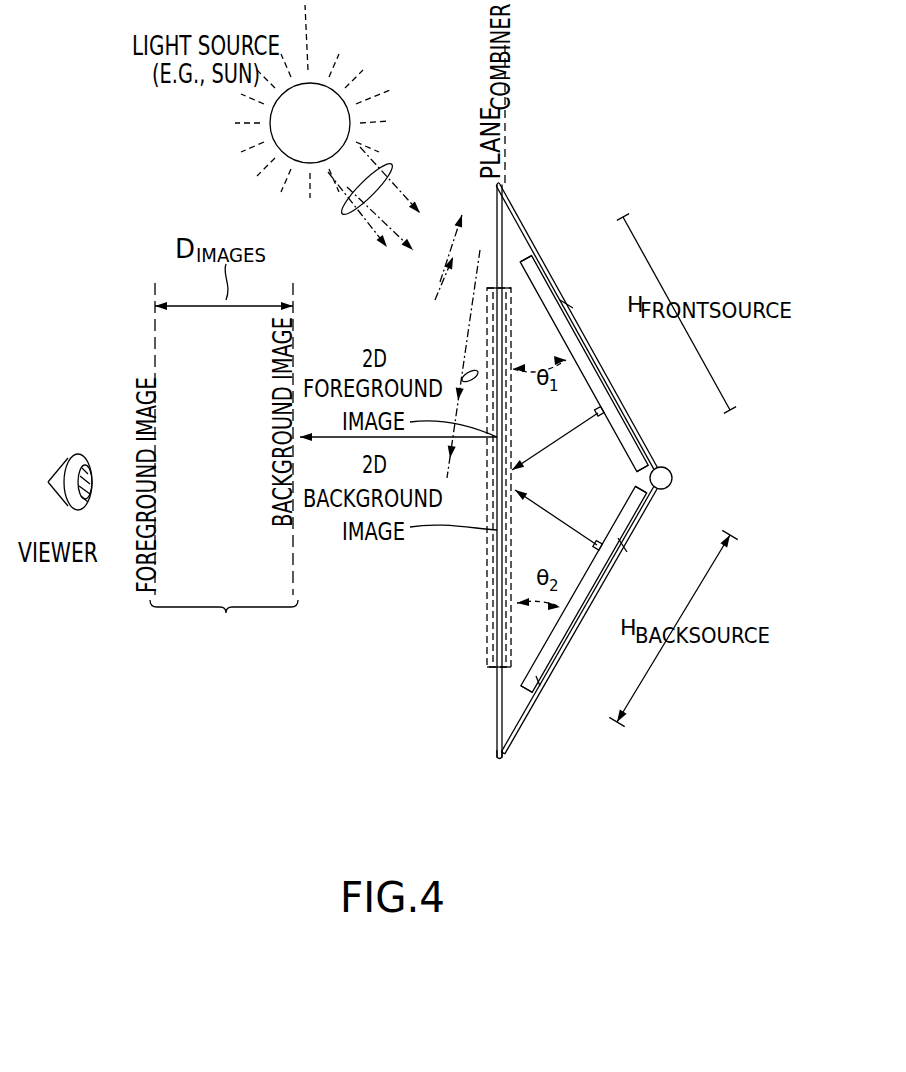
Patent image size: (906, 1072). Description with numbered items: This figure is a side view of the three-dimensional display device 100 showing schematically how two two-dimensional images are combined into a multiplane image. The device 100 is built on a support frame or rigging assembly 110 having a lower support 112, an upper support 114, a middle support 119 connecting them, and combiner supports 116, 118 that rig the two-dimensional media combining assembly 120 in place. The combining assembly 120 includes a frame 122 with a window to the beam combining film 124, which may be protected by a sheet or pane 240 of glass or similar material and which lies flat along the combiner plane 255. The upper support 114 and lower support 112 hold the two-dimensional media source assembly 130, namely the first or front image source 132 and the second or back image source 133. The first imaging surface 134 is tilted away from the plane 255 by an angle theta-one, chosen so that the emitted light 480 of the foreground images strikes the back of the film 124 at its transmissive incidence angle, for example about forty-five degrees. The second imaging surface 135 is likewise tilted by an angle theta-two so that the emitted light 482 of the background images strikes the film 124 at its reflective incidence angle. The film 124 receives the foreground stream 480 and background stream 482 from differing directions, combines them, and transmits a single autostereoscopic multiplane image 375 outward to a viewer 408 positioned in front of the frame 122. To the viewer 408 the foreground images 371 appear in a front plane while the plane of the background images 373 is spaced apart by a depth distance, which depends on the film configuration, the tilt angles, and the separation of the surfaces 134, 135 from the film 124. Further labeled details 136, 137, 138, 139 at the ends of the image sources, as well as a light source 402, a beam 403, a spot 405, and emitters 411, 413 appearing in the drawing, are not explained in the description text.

The 3D display device 100 is at (637, 135).
The support frame or rigging assembly 110 is at (480, 752).
The lower support 112 is at (552, 682).
The upper support 114 is at (540, 262).
The combiner support 116 is at (496, 705).
The combiner support 118 is at (497, 190).
The middle support 119 is at (673, 478).
The 2D media combining assembly 120 is at (462, 652).
The frame 122 is at (493, 670).
The beam combining film 124 is at (516, 742).
The 2D media source assembly 130 is at (537, 343).
The first 2D image source 132 is at (575, 297).
The second 2D image source 133 is at (634, 545).
The first 2D imaging surface 134 is at (537, 305).
The second 2D imaging surface 135 is at (538, 678).
The front source top end 136 is at (528, 246).
The back source bottom end 137 is at (530, 700).
The front source bottom end 138 is at (655, 460).
The back source top end 139 is at (662, 494).
The sheet or pane 240 is at (476, 298).
The combiner plane 255 is at (506, 168).
The foreground images 371 is at (150, 343).
The plane of the background images 373 is at (300, 572).
The autostereoscopic multiplane image 375 is at (224, 622).
The light source (sun) 402 is at (270, 118).
The light beam 403 is at (395, 165).
The light spot 405 is at (465, 373).
The viewer 408 is at (55, 468).
The front source light emitter 411 is at (600, 372).
The back source light emitter 413 is at (585, 598).
The emitted light of the foreground image 480 is at (565, 447).
The emitted light of the background image 482 is at (556, 517).